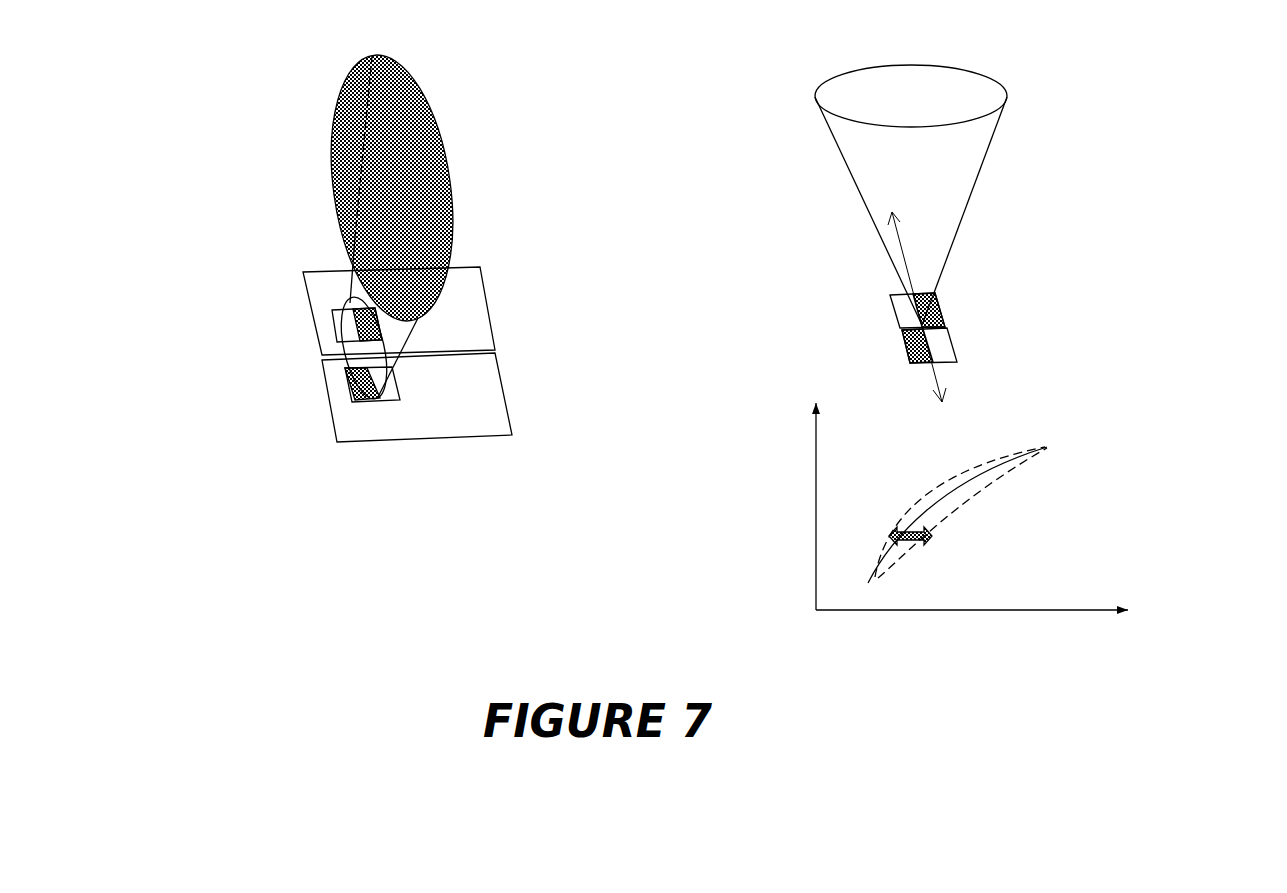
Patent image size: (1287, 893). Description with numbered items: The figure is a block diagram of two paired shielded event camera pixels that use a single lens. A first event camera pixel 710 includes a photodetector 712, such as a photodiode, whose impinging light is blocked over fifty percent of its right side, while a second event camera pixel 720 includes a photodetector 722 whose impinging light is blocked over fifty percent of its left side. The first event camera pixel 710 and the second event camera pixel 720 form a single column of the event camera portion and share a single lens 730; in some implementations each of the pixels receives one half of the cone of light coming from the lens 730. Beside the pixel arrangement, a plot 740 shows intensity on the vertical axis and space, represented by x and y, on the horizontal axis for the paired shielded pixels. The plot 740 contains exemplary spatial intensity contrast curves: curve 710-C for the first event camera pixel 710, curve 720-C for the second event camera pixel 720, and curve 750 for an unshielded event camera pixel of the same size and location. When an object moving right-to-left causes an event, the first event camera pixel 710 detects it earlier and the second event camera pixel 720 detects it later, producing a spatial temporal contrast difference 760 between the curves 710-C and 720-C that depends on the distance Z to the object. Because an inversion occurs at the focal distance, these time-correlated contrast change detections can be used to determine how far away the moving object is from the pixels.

The first event camera pixel 710 is at (305, 287).
The photodetector 712 is at (331, 312).
The second event camera pixel 720 is at (332, 413).
The photodetector 722 is at (348, 382).
The lens 730 is at (802, 103).
The plot 740 is at (668, 405).
The unshielded event camera pixel contrast curve 750 is at (955, 492).
The first event camera pixel contrast curve 710-C is at (915, 503).
The second event camera pixel contrast curve 720-C is at (950, 513).
The spatial temporal contrast difference 760 is at (909, 546).